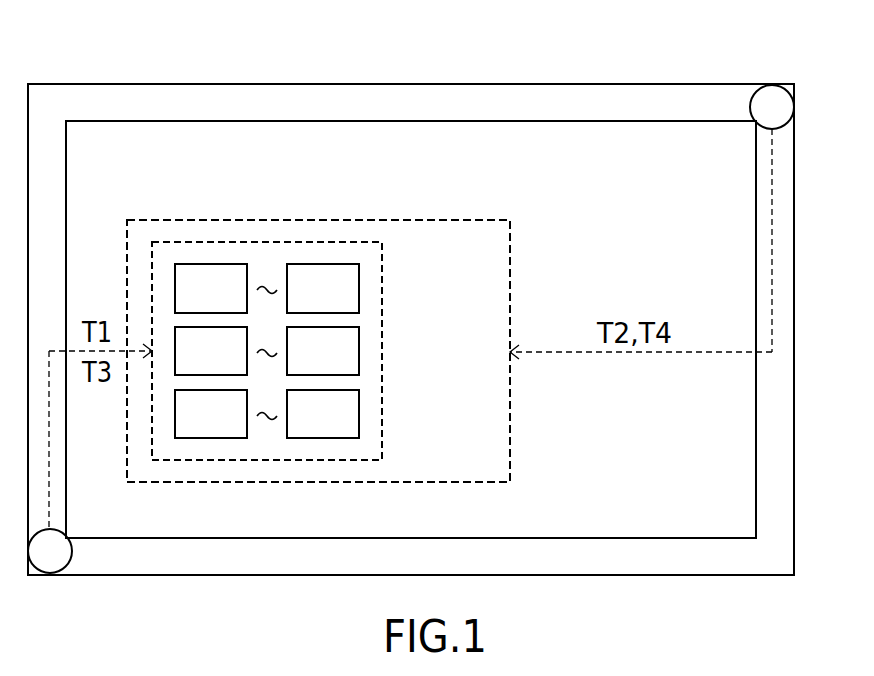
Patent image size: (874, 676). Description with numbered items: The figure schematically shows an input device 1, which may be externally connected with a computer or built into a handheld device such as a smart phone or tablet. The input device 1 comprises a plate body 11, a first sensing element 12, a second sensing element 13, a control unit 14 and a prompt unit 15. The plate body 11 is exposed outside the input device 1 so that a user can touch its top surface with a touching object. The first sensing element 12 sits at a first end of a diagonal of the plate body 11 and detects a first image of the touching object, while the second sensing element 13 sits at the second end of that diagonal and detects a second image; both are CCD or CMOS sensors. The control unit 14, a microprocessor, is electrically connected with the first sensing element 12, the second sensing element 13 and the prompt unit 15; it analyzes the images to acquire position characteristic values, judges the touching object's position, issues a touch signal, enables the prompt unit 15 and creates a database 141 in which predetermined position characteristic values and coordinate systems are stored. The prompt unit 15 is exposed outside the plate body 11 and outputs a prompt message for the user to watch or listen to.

The input device 1 is at (150, 49).
The plate body 11 is at (525, 141).
The first sensing element 12 is at (51, 548).
The second sensing element 13 is at (773, 103).
The control unit 14 is at (391, 232).
The database 141 is at (368, 371).
The prompt unit 15 is at (357, 121).